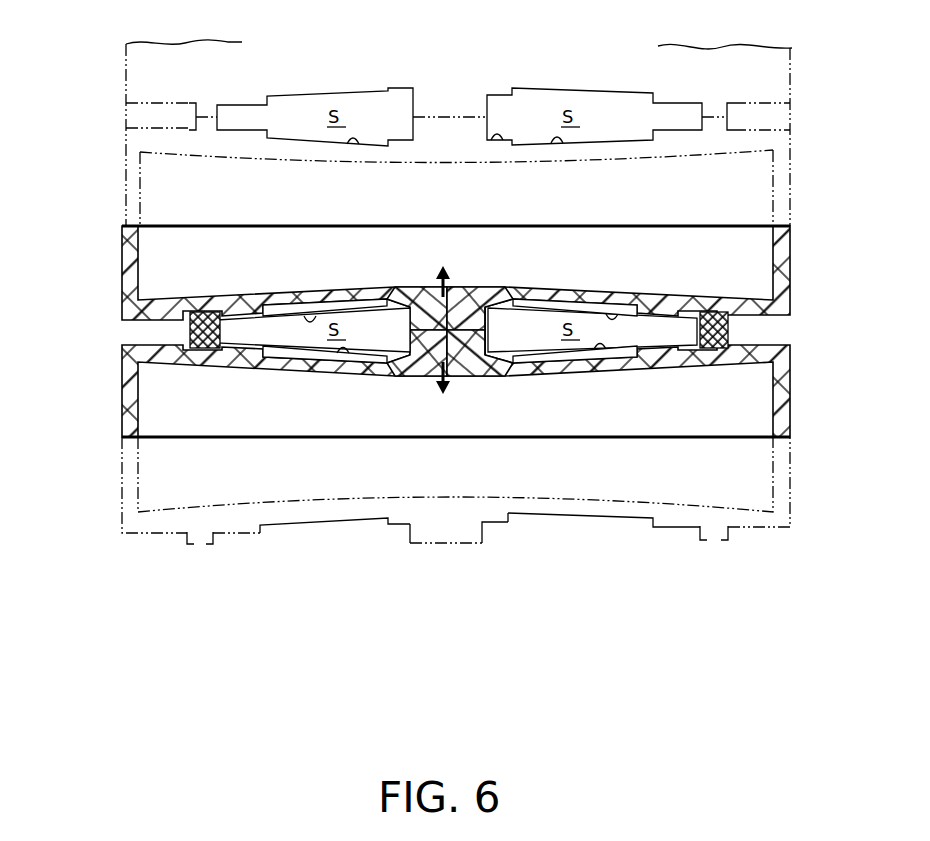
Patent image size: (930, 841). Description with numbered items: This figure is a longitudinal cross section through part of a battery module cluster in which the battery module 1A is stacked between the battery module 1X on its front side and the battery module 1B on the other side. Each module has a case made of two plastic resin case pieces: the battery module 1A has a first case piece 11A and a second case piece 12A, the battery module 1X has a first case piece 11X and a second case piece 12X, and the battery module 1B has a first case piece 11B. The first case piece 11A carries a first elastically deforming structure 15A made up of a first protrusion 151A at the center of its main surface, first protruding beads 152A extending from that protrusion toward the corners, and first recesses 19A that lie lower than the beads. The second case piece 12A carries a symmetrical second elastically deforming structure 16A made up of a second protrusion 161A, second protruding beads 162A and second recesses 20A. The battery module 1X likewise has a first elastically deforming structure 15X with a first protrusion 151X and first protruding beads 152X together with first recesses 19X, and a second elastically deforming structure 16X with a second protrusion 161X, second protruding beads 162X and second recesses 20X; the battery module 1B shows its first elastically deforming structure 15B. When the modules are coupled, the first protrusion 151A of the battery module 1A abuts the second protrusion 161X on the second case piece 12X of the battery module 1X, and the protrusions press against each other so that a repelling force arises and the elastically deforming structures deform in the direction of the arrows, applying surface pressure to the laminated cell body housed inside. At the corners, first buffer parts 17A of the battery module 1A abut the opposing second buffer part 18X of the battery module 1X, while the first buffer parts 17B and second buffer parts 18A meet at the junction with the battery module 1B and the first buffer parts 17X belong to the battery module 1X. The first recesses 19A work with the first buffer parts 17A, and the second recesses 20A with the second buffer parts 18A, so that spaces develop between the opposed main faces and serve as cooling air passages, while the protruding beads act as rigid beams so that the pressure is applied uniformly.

The battery module 1A is at (93, 224).
The battery module 1B is at (93, 47).
The battery module 1X is at (93, 409).
The first case piece 11A is at (128, 270).
The first case piece 11B is at (128, 68).
The first case piece 11X is at (138, 488).
The second case piece 12A is at (140, 168).
The second case piece 12X is at (128, 366).
The first elastically deforming structure 15A is at (396, 280).
The first elastically deforming structure 15B is at (396, 80).
The first elastically deforming structure 15X is at (402, 560).
The first protrusion 151A is at (485, 320).
The first protrusion 151X is at (460, 543).
The first protruding beads 152A is at (530, 312).
The first protruding beads 152X is at (505, 523).
The second elastically deforming structure 16A is at (400, 180).
The second elastically deforming structure 16X is at (458, 396).
The second protrusion 161A is at (430, 145).
The second protrusion 161X is at (486, 357).
The second protruding beads 162A is at (498, 144).
The second protruding beads 162X is at (532, 356).
The first buffer parts 17A is at (735, 317).
The first buffer parts 17B is at (126, 103).
The first buffer parts 17X is at (200, 545).
The second buffer parts 18A is at (128, 128).
The second buffer part 18X is at (735, 334).
The first recesses 19A is at (310, 308).
The first recesses 19X is at (338, 520).
The second recesses 20A is at (353, 145).
The second recesses 20X is at (340, 356).